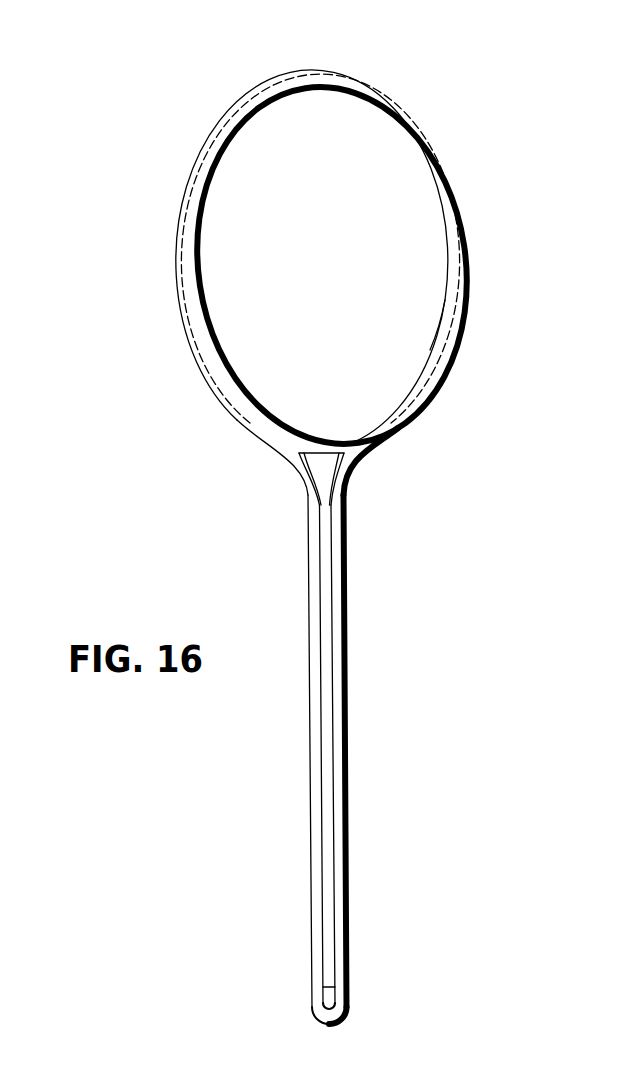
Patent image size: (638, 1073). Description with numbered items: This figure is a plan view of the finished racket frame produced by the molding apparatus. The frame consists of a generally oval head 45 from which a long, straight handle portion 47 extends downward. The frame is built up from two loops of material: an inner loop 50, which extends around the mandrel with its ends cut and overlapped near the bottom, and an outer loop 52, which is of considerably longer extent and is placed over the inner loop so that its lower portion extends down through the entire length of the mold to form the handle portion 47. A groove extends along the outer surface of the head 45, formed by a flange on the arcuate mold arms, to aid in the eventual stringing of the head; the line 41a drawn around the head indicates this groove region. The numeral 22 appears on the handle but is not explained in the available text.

The head 45 is at (278, 78).
The concealed wire element 41a is at (437, 144).
The inner loop 50 is at (450, 281).
The outer loop 52 is at (307, 488).
The handle portion 47 is at (346, 612).
The channel 22 is at (324, 778).